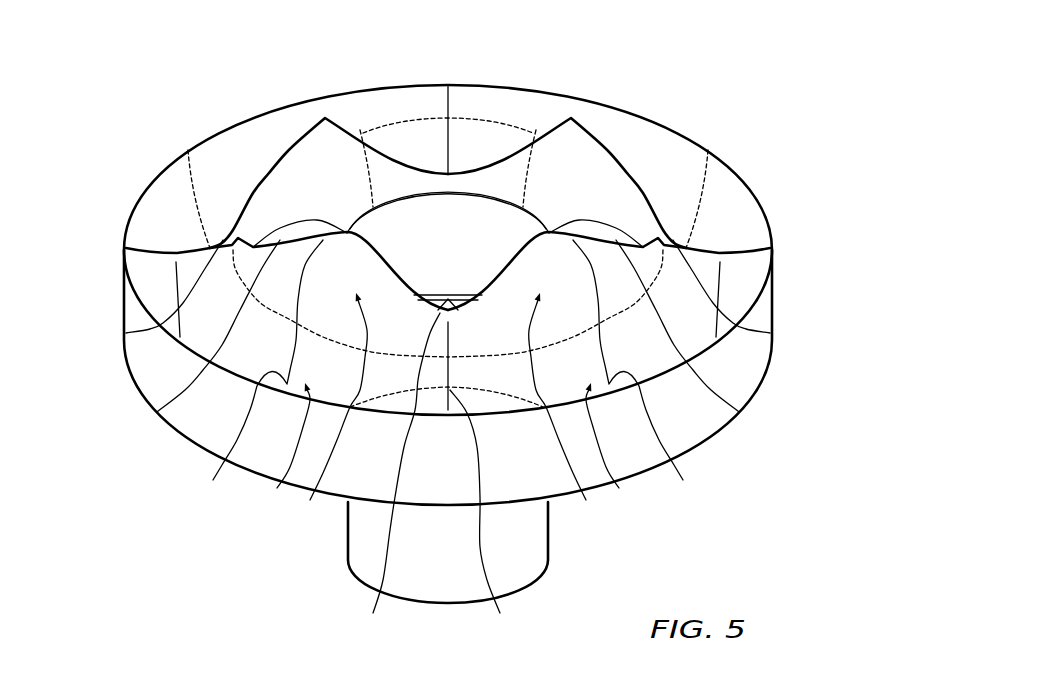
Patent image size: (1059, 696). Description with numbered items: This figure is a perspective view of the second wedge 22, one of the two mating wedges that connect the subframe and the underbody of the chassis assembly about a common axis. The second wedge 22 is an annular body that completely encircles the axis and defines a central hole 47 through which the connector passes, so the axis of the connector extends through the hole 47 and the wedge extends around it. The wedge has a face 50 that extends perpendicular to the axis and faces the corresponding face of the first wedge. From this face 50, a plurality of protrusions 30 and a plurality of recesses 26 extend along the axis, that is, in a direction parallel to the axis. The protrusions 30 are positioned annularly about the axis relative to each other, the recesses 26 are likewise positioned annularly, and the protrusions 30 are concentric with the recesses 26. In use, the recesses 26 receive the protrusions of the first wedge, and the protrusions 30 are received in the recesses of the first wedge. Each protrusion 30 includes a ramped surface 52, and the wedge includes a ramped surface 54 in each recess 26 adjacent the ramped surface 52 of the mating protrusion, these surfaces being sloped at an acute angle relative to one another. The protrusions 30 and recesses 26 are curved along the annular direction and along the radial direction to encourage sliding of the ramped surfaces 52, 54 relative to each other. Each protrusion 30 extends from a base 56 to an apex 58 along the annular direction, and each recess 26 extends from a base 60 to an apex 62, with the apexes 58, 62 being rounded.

The second wedge 22 is at (195, 136).
The recess 26 is at (181, 223).
The protrusion 30 is at (302, 155).
The hole 47 is at (415, 223).
The face 50 is at (197, 57).
The ramped surface 52 is at (517, 147).
The ramped surface 54 is at (348, 535).
The base 56 is at (448, 173).
The apex 58 is at (325, 117).
The base 60 is at (177, 253).
The apex 62 is at (213, 480).